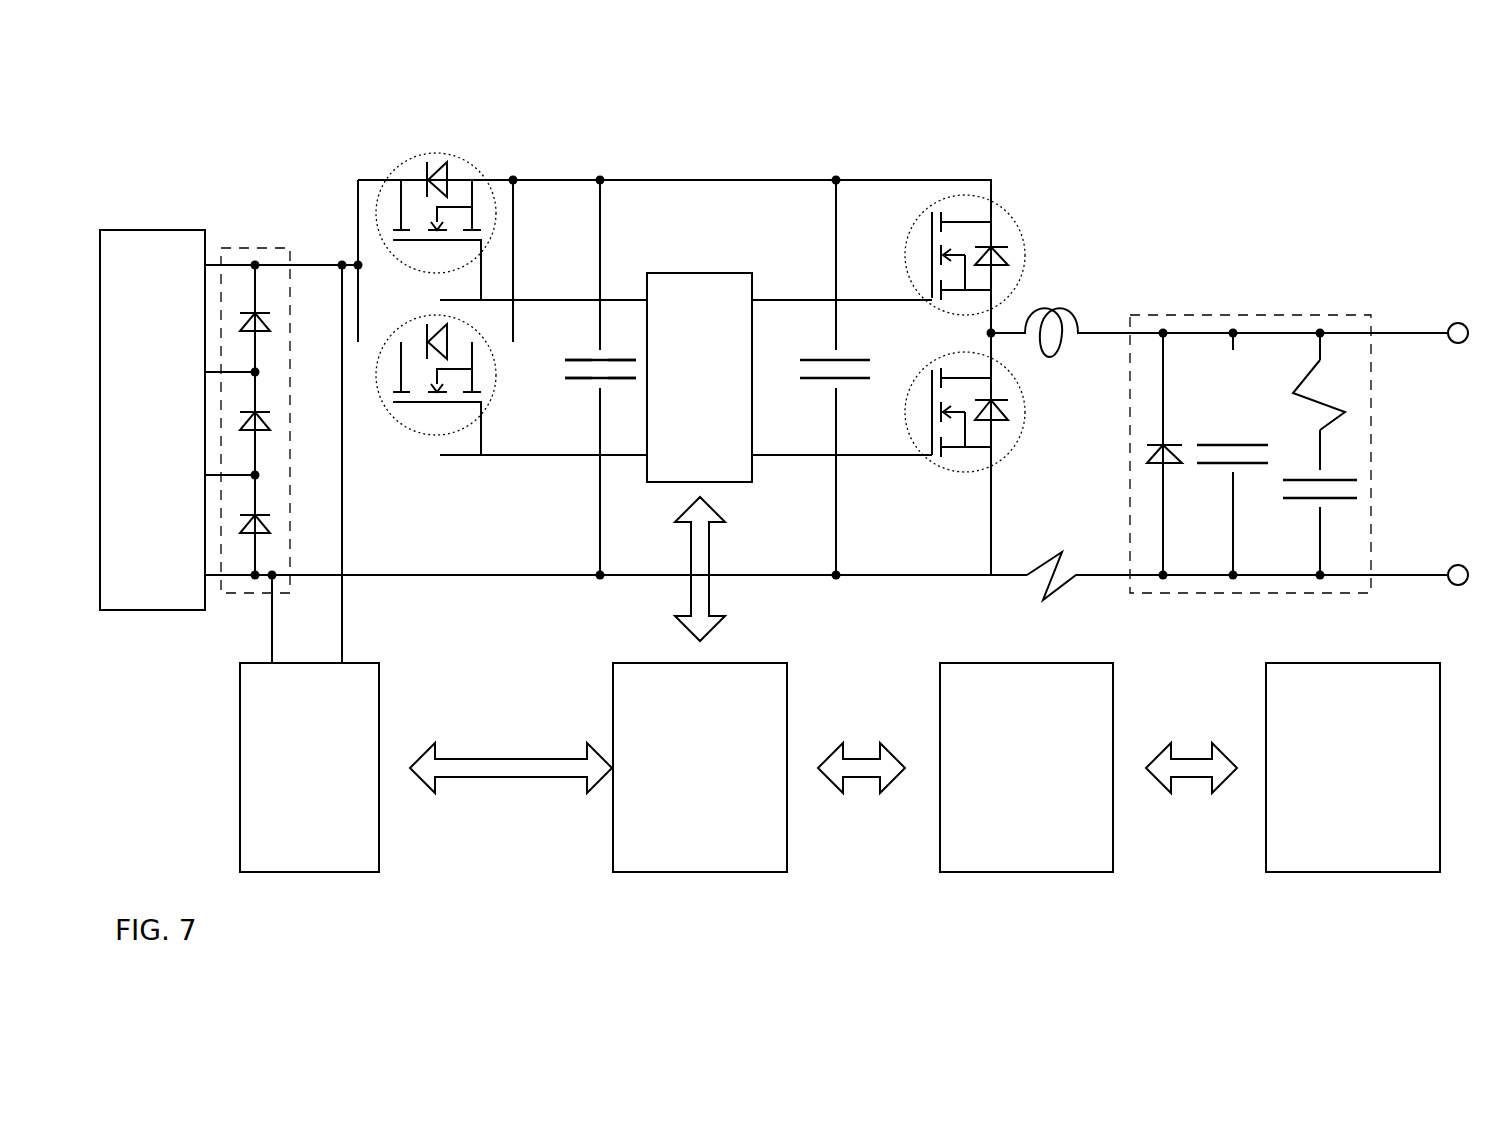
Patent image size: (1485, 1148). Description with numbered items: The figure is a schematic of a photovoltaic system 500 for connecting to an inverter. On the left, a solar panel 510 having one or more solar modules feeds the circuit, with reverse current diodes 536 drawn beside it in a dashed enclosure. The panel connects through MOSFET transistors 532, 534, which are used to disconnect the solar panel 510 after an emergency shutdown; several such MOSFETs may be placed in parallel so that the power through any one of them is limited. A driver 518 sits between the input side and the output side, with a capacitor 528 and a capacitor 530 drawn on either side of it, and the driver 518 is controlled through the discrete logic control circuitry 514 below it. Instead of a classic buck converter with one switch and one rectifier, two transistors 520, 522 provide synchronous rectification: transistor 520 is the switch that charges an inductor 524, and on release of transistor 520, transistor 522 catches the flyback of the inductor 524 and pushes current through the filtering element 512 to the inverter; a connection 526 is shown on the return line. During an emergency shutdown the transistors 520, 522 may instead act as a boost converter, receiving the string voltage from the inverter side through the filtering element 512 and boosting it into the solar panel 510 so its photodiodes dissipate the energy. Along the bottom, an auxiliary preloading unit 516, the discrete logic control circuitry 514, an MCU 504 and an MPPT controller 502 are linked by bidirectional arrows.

The photovoltaic system 500 is at (1303, 143).
The MPPT controller 502 is at (1272, 872).
The MCU 504 is at (945, 872).
The solar panel 510 is at (153, 230).
The filtering element 512 is at (1250, 300).
The discrete logic control circuitry 514 is at (618, 872).
The auxiliary preloading unit 516 is at (245, 872).
The driver 518 is at (700, 273).
The transistor 520 is at (1027, 197).
The transistor 522 is at (930, 468).
The inductor 524 is at (1078, 300).
The connection 526 is at (1025, 590).
The capacitor 528 is at (583, 393).
The capacitor 530 is at (822, 392).
The MOSFET transistor 532 is at (480, 145).
The MOSFET transistor 534 is at (436, 385).
The reverse current diodes 536 is at (235, 248).